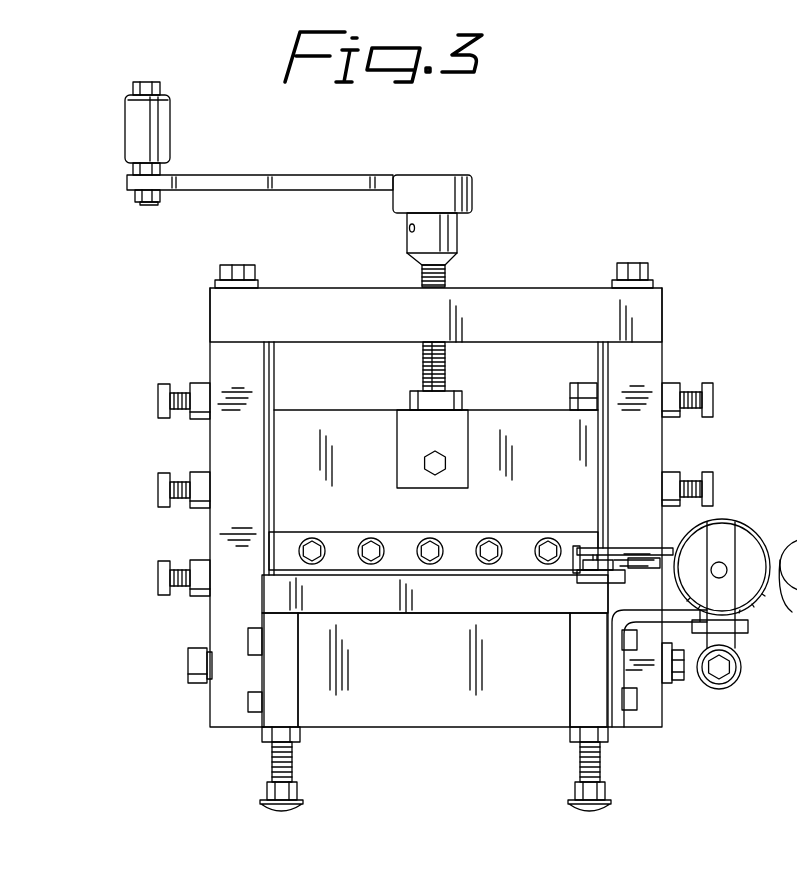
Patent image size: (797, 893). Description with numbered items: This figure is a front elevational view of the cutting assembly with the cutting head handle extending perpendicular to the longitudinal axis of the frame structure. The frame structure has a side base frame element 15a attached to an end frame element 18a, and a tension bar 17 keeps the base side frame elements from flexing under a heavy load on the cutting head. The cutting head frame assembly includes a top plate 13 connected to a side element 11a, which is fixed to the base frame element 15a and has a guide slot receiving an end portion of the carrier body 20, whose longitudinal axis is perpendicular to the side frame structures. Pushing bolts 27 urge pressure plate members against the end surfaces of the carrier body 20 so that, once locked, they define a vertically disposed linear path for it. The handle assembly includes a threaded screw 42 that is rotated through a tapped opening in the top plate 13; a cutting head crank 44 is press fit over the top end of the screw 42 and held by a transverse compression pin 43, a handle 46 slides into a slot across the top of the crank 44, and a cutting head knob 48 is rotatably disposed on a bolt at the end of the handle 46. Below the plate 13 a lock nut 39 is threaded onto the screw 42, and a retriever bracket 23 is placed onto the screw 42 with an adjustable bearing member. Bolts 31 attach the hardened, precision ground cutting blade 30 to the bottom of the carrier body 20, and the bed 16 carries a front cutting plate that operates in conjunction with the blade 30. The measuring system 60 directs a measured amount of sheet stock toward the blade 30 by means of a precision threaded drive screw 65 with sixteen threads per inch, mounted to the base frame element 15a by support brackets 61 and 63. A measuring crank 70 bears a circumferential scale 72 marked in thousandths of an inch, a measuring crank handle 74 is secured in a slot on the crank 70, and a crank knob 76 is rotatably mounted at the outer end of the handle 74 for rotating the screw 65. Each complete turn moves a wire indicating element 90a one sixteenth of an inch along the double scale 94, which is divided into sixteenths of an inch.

The side element 11a is at (657, 350).
The top plate 13 is at (507, 298).
The side base frame element 15a is at (278, 700).
The bed 16 is at (420, 603).
The tension bar 17 is at (678, 685).
The end frame element 18a is at (435, 705).
The carrier body 20 is at (540, 412).
The retriever bracket 23 is at (462, 425).
The pushing bolts 27 is at (165, 388).
The cutting blade 30 is at (385, 540).
The bolts 31 is at (545, 540).
The lock nut 39 is at (415, 395).
The threaded screw 42 is at (422, 278).
The compression pin 43 is at (408, 228).
The cutting head crank 44 is at (455, 195).
The handle 46 is at (282, 178).
The cutting head knob 48 is at (172, 110).
The measuring system 60 is at (612, 538).
The support bracket 61 is at (618, 665).
The support bracket 63 is at (748, 630).
The precision threaded drive screw 65 is at (795, 522).
The measuring crank 70 is at (792, 545).
The circumferential scale 72 is at (737, 520).
The measuring crank handle 74 is at (721, 527).
The crank knob 76 is at (735, 690).
The wire indicating element 90a is at (597, 561).
The double scale 94 is at (590, 580).